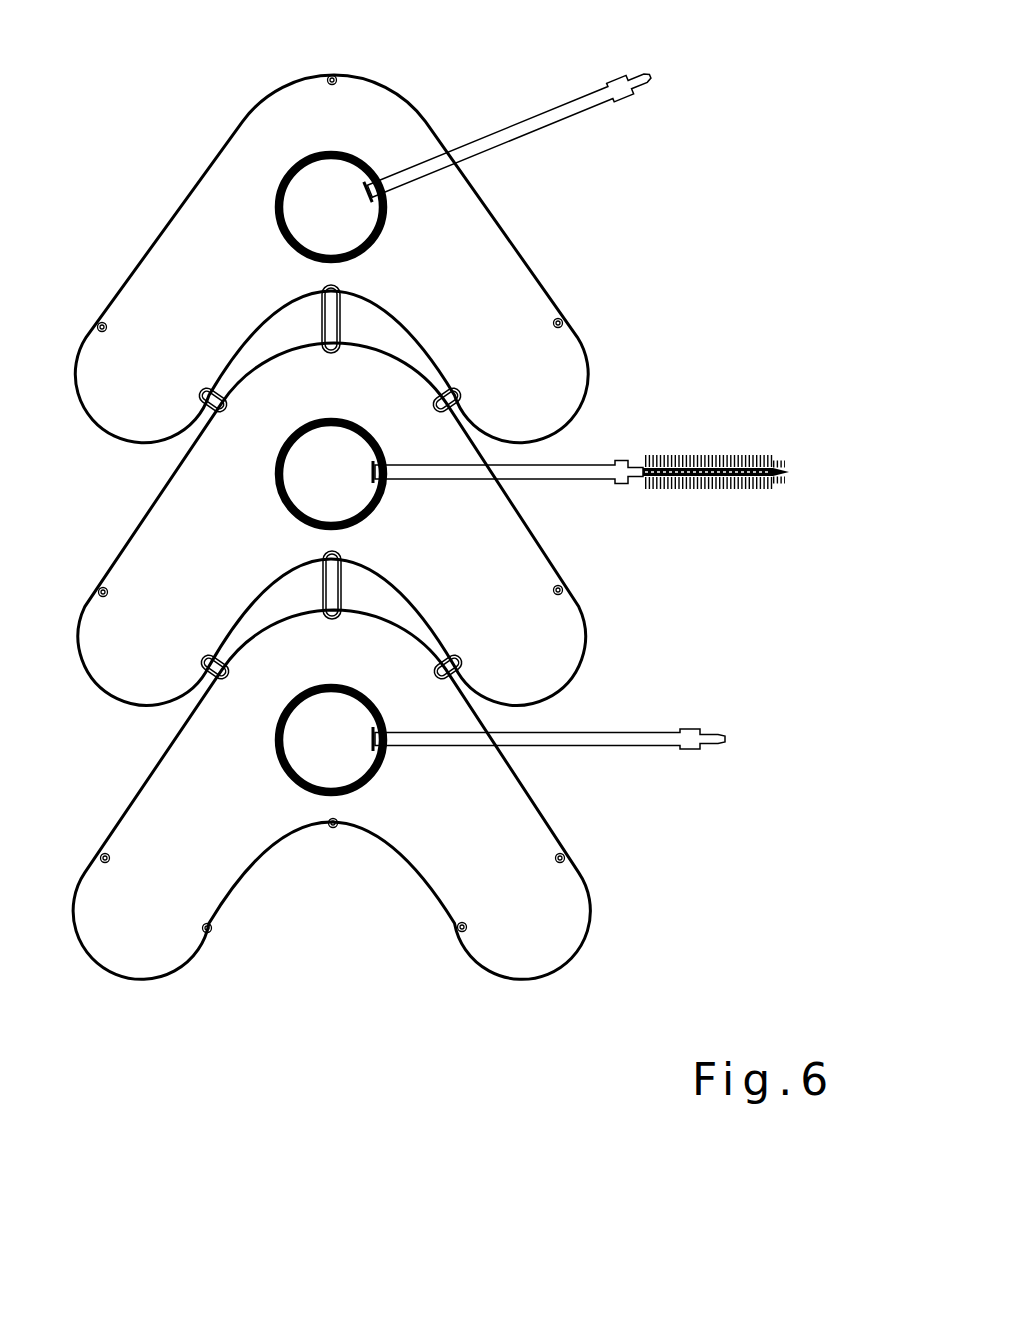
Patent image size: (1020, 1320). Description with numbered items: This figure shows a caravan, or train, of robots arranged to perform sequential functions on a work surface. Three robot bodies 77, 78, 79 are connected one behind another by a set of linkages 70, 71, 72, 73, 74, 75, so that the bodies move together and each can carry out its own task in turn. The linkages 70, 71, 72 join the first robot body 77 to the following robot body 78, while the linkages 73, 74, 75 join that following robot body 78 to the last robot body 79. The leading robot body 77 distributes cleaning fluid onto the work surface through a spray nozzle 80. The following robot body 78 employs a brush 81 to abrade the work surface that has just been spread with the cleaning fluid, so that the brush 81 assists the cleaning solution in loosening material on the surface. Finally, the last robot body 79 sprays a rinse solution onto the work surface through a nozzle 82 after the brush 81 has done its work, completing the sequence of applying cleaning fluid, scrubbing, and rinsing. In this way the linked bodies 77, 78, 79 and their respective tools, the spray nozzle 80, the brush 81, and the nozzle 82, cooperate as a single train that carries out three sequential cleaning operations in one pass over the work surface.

The linkage 70 is at (203, 390).
The linkage 71 is at (320, 320).
The linkage 72 is at (453, 388).
The linkage 73 is at (203, 657).
The linkage 74 is at (318, 588).
The linkage 75 is at (462, 653).
The robot body 77 is at (479, 265).
The robot body 78 is at (481, 536).
The robot body 79 is at (480, 807).
The spray nozzle 80 is at (610, 80).
The brush 81 is at (690, 453).
The nozzle 82 is at (688, 730).